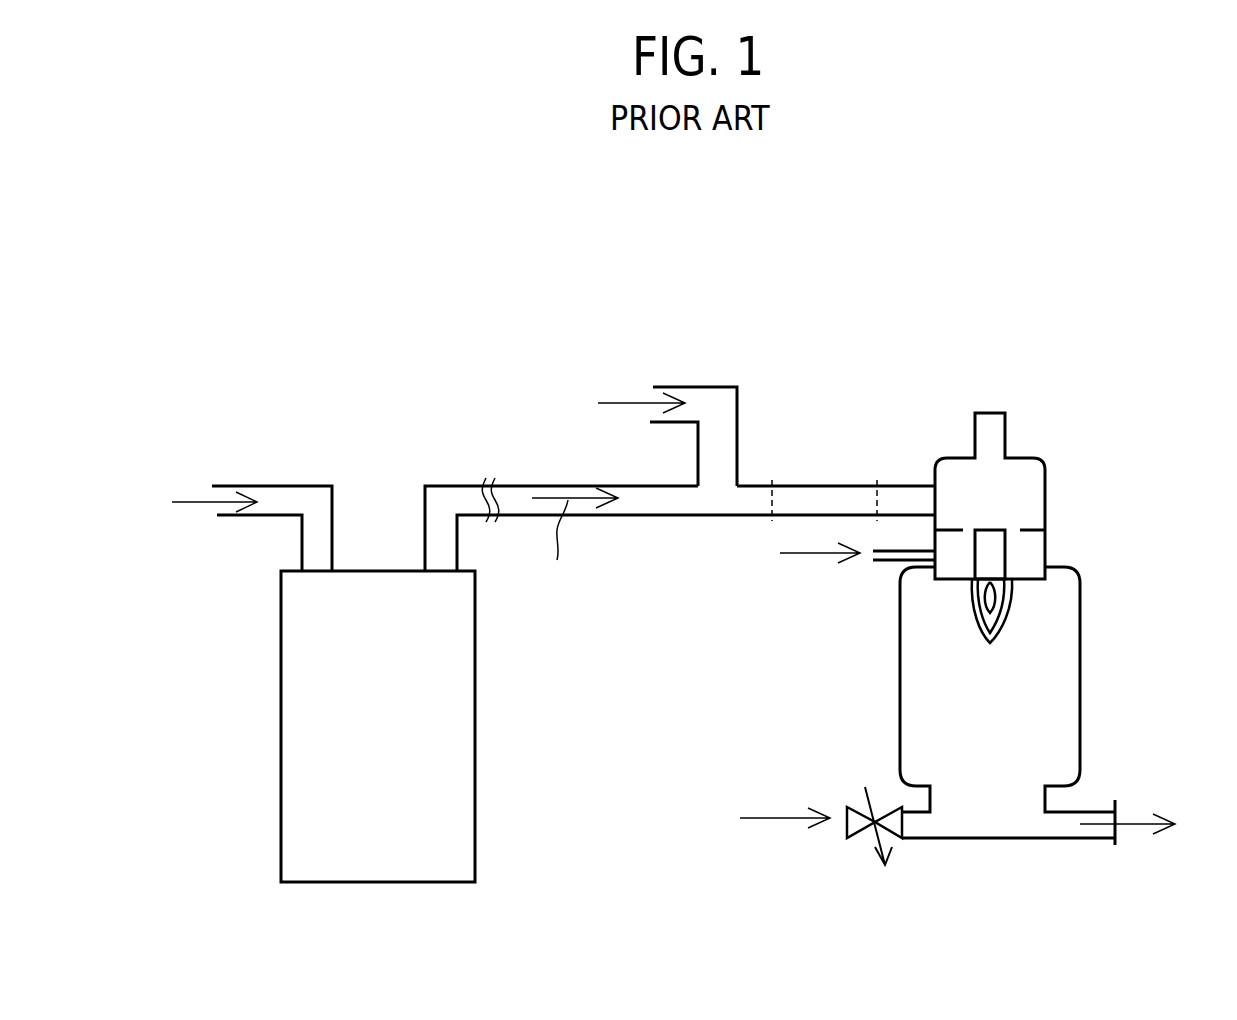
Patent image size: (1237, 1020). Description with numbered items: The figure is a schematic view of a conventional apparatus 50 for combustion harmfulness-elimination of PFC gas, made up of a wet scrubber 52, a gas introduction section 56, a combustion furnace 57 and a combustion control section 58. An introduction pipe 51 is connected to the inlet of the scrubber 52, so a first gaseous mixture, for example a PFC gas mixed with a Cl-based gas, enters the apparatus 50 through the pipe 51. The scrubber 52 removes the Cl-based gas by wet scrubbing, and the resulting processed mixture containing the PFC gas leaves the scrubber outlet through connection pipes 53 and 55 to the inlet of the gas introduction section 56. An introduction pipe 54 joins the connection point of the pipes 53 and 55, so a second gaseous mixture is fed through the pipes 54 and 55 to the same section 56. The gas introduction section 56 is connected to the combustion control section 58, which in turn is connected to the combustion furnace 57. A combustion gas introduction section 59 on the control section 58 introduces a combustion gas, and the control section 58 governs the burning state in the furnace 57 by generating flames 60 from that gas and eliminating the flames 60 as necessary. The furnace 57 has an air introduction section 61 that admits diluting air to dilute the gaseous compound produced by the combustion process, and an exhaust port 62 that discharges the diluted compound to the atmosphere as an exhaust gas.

The apparatus for combustion harmfulness-elimination of PFC gas 50 is at (685, 295).
The introduction pipe 51 is at (270, 486).
The wet scrubber 52 is at (302, 820).
The connection pipe 53 is at (550, 486).
The introduction pipe 54 is at (740, 440).
The connection pipe 55 is at (825, 483).
The gas introduction section 56 is at (1037, 478).
The combustion furnace 57 is at (1067, 705).
The combustion control section 58 is at (997, 557).
The combustion gas introduction section 59 is at (892, 557).
The flames 60 is at (993, 627).
The air introduction section 61 is at (853, 818).
The exhaust port 62 is at (1122, 833).